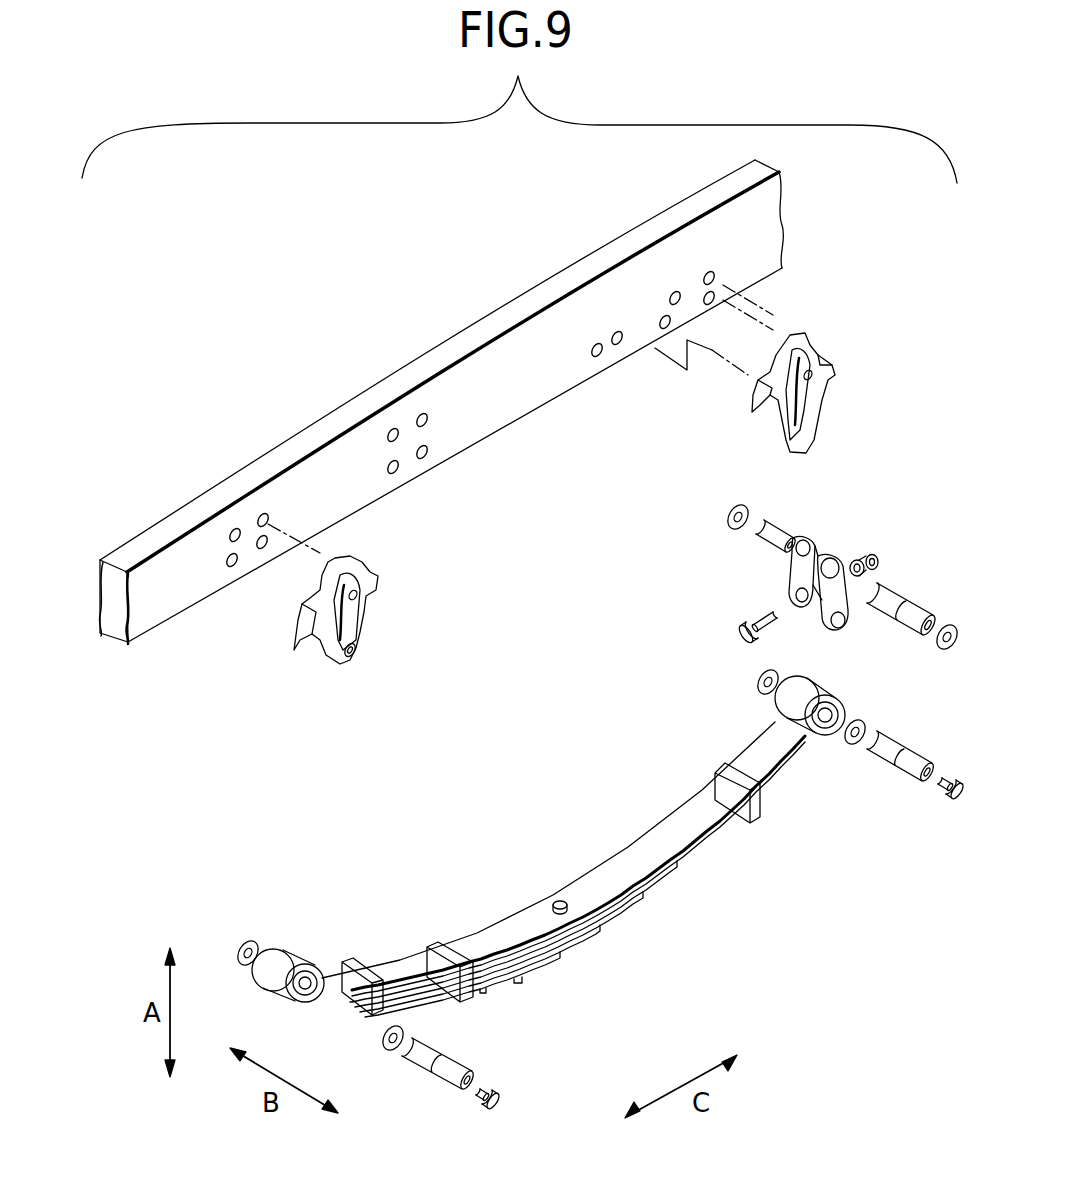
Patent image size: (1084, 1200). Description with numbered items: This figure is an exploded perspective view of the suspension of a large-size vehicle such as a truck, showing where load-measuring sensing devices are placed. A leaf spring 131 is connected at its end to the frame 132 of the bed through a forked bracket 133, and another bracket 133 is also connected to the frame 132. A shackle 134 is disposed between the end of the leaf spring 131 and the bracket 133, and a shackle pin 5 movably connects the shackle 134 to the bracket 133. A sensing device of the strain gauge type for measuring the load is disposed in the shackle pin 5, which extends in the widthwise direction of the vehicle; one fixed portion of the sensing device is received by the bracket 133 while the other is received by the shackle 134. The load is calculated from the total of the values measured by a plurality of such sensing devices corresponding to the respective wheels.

The frame 132 is at (292, 455).
The bracket 133 is at (364, 613).
The shackle 134 is at (788, 582).
The shackle pin 5 is at (917, 608).
The leaf spring 131 is at (697, 855).